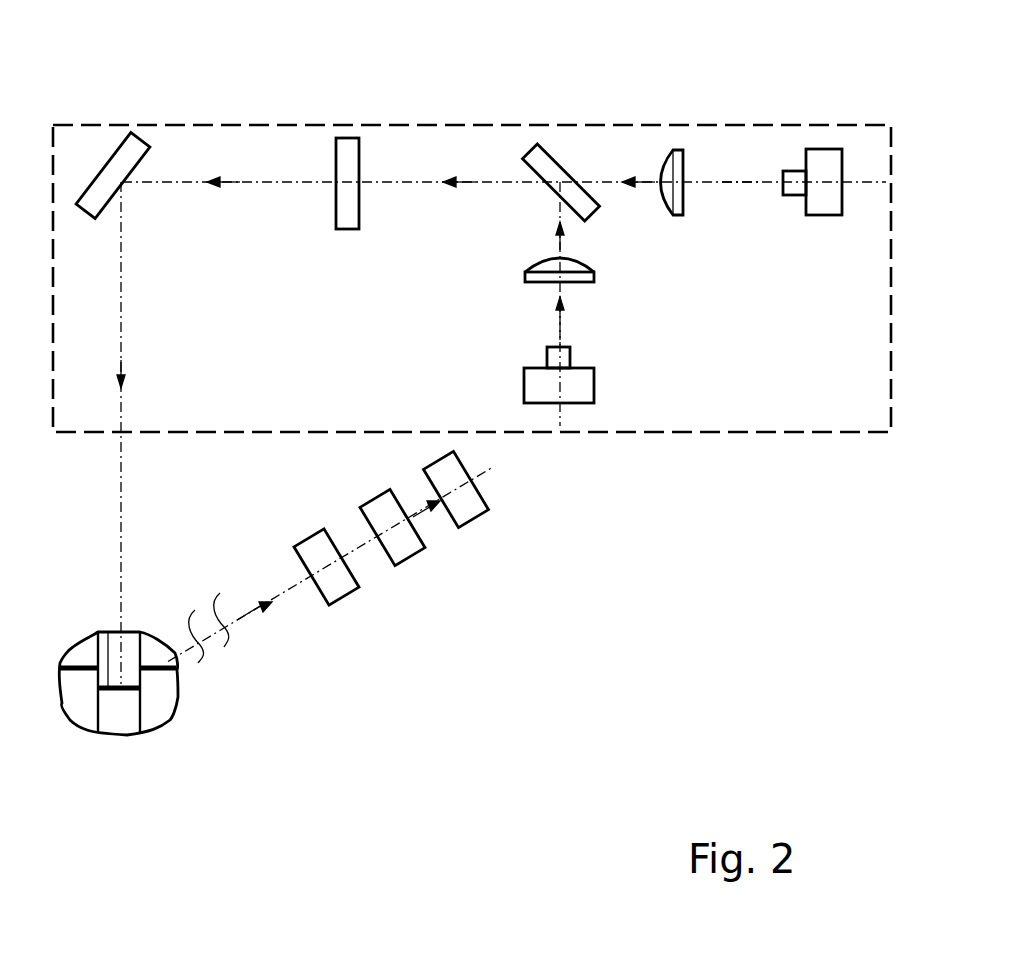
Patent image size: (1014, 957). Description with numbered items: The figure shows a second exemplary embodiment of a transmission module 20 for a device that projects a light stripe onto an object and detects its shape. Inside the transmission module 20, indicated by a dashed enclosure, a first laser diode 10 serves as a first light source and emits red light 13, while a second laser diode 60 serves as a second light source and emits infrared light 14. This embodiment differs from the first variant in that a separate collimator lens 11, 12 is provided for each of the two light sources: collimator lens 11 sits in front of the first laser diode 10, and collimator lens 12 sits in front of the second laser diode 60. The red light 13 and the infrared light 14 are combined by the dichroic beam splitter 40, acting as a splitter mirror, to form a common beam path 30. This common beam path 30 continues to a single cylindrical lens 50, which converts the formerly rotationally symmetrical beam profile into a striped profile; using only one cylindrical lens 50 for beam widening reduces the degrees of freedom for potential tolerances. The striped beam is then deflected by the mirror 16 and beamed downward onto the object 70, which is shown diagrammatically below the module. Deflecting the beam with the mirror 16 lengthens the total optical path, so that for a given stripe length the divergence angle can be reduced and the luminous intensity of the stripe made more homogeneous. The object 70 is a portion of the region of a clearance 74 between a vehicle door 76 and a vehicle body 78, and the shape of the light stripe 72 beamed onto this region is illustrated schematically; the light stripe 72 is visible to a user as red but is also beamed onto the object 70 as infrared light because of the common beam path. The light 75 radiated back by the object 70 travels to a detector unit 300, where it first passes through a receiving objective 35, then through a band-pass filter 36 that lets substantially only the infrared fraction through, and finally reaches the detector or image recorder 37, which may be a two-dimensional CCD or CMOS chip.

The first laser diode 10 is at (572, 388).
The collimator lens 11 is at (590, 267).
The collimator lens 12 is at (678, 160).
The red light 13 is at (560, 333).
The infrared light 14 is at (727, 174).
The mirror 16 is at (115, 162).
The transmission module 20 is at (411, 322).
The common beam path 30 is at (270, 182).
The receiving objective 35 is at (338, 583).
The band-pass filter 36 is at (413, 547).
The detector or image recorder 37 is at (467, 512).
The dichroic beam splitter 40 is at (553, 165).
The cylindrical lens 50 is at (349, 152).
The second laser diode 60 is at (822, 162).
The object 70 is at (185, 818).
The light stripe 72 is at (110, 632).
The clearance 74 is at (113, 715).
The light radiated back 75 is at (288, 588).
The vehicle door 76 is at (163, 703).
The vehicle body 78 is at (85, 705).
The detector unit 300 is at (436, 576).